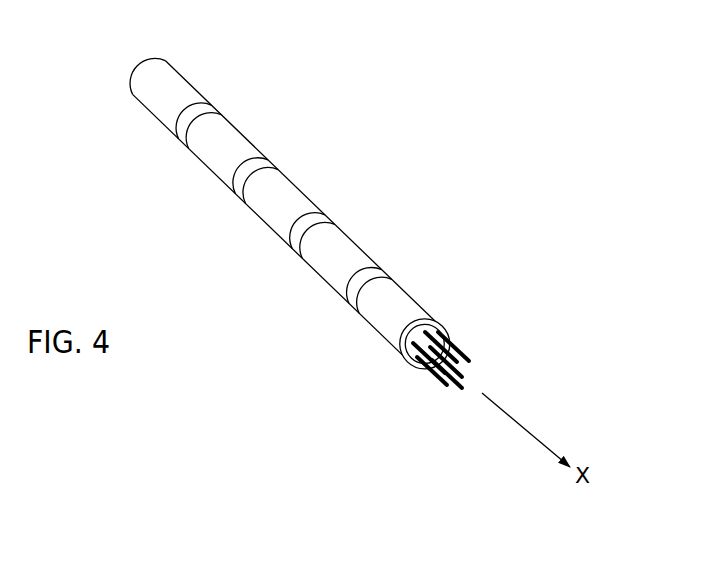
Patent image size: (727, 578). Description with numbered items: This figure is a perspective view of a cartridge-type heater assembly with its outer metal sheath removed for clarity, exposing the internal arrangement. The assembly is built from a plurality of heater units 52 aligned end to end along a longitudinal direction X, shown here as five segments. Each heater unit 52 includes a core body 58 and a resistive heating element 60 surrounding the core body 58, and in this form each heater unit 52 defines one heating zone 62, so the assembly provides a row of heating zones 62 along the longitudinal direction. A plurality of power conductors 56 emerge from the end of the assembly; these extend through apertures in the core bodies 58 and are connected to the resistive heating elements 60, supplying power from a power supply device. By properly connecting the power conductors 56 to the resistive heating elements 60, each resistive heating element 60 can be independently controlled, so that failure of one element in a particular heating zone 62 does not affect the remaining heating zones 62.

The heater unit 52 is at (195, 63).
The resistive heating element 60 is at (197, 92).
The core body 58 is at (144, 106).
The heating zone 62 is at (148, 125).
The power conductor 56 is at (450, 332).